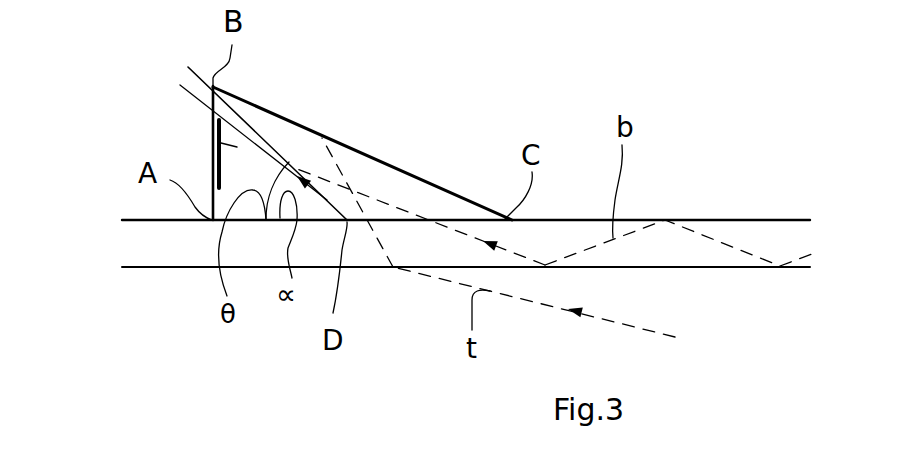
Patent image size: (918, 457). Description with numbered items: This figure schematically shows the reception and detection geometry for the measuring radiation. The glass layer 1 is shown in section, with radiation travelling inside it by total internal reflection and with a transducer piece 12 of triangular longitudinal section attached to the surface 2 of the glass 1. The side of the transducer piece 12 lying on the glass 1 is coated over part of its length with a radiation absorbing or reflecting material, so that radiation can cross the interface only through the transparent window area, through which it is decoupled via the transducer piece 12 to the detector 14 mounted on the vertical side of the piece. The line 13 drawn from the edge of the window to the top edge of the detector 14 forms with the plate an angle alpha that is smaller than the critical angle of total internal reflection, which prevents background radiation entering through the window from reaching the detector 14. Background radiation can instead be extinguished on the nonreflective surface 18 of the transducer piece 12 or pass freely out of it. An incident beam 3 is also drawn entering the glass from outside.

The glass layer 1 is at (660, 243).
The surface of the glass 2 is at (755, 219).
The incident light beam 3 is at (728, 268).
The transducer piece 12 is at (335, 110).
The line drawn toward the detector from the edge D of the window 13 is at (400, 218).
The detector 14 is at (214, 171).
The nonreflective surface 18 is at (458, 196).